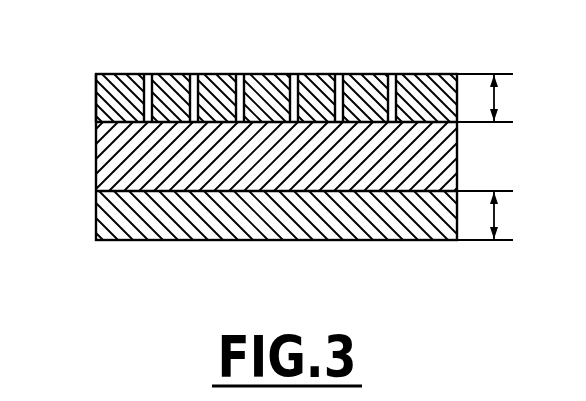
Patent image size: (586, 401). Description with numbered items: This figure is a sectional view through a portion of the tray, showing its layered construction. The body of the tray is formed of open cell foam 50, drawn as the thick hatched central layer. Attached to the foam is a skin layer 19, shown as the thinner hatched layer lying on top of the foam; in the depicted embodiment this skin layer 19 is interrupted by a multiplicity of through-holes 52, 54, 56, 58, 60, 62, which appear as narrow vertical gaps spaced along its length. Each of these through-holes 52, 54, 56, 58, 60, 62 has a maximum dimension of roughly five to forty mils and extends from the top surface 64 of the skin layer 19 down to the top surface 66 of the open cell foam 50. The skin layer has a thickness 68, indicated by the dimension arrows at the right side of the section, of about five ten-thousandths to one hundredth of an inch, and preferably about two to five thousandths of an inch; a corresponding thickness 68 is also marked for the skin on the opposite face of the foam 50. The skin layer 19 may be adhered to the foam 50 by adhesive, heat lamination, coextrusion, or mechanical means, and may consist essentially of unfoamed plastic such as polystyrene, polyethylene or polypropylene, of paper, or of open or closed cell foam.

The skin layer 19 is at (445, 74).
The open cell foam 50 is at (448, 162).
The through-hole 52 is at (148, 74).
The through-hole 54 is at (195, 74).
The through-hole 56 is at (240, 74).
The through-hole 58 is at (295, 74).
The through-hole 60 is at (340, 74).
The through-hole 62 is at (398, 74).
The top surface of the skin layer 64 is at (117, 74).
The top surface of the open cell foam layer 66 is at (107, 105).
The thickness of the skin layer 68 is at (496, 98).